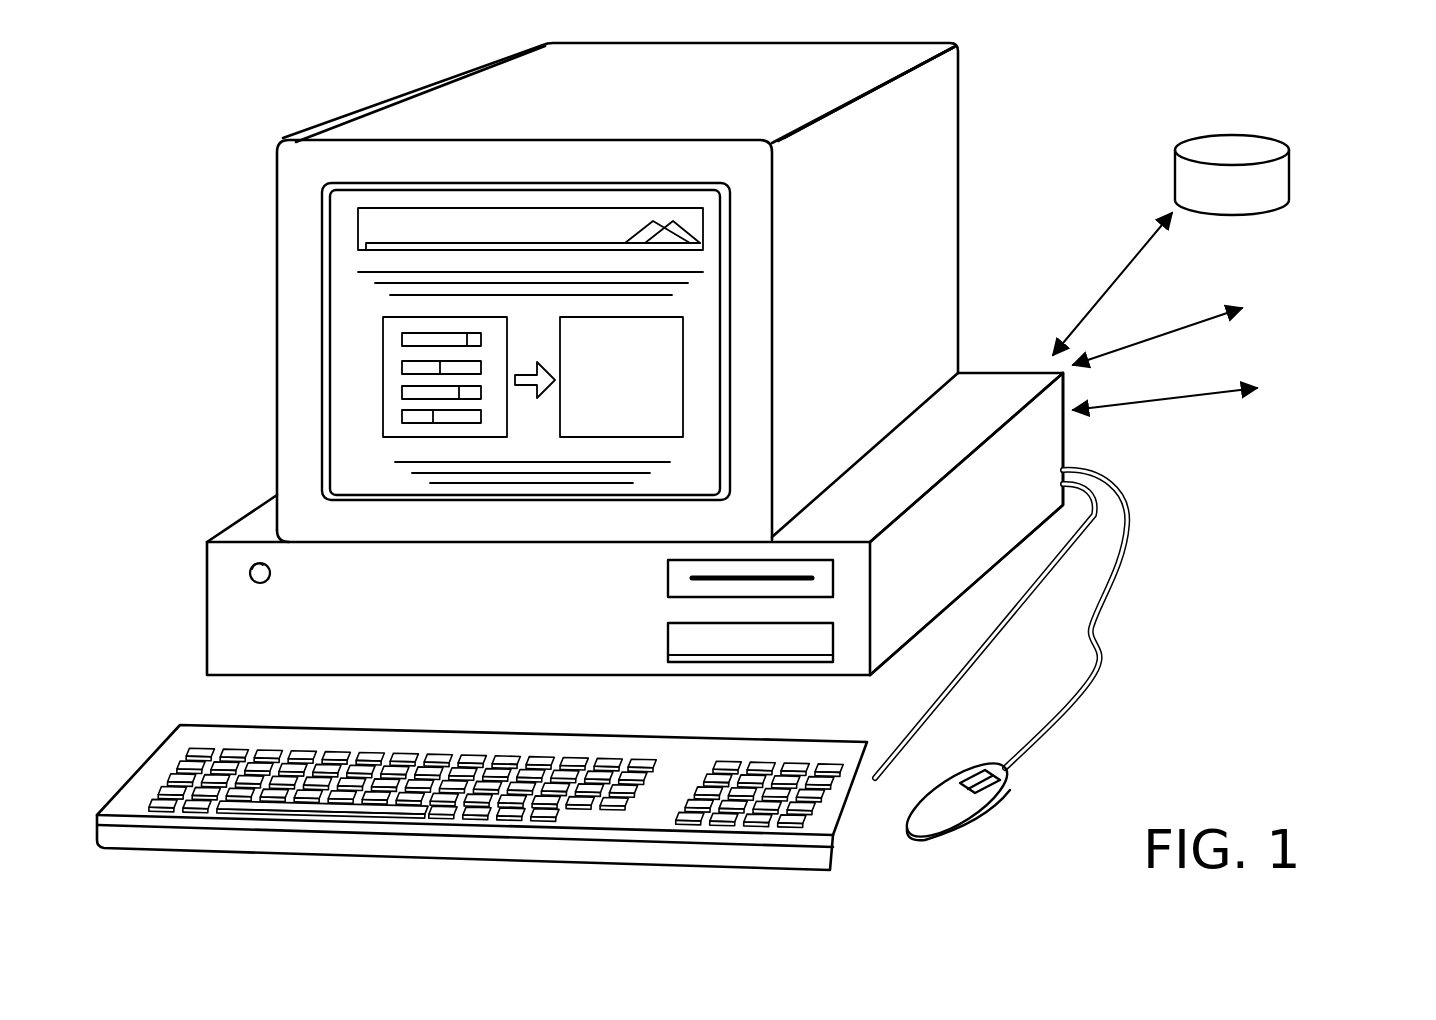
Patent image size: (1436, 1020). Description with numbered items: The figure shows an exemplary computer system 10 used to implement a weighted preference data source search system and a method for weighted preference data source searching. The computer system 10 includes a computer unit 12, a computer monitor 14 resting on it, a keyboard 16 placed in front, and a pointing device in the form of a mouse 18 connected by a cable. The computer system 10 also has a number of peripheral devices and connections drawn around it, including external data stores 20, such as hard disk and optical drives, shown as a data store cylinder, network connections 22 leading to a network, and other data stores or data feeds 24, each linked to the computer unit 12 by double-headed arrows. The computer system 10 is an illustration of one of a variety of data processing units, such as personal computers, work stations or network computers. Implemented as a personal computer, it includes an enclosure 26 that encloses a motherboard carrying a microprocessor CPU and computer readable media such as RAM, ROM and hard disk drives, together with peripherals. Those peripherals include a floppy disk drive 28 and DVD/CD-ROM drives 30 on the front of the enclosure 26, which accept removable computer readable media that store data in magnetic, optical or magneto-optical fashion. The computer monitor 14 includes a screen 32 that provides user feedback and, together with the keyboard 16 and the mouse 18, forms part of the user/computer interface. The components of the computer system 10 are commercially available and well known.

The computer system 10 is at (190, 163).
The computer unit 12 is at (225, 607).
The computer monitor 14 is at (958, 153).
The keyboard 16 is at (730, 862).
The mouse 18 is at (970, 820).
The external data stores 20 is at (1290, 172).
The network connections 22 is at (1155, 335).
The other data stores or data feeds 24 is at (1155, 398).
The enclosure 26 is at (995, 537).
The floppy disk drive 28 is at (668, 579).
The DVD/CD-ROM drives 30 is at (668, 644).
The screen 32 is at (710, 476).